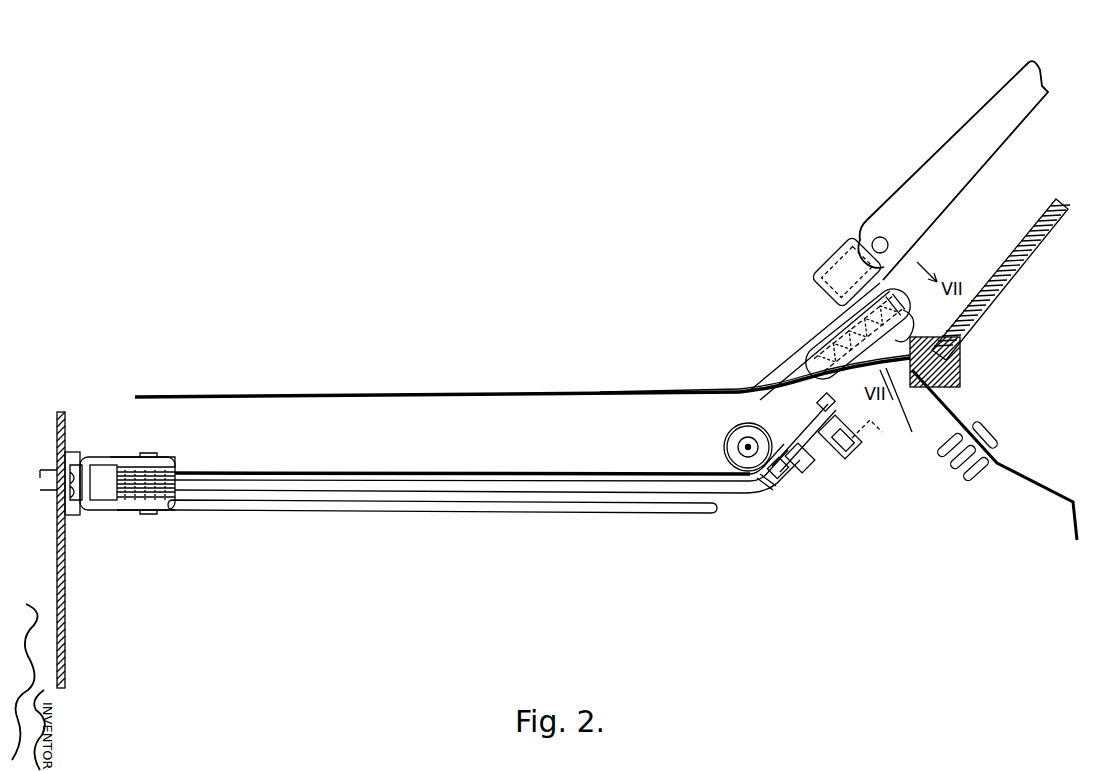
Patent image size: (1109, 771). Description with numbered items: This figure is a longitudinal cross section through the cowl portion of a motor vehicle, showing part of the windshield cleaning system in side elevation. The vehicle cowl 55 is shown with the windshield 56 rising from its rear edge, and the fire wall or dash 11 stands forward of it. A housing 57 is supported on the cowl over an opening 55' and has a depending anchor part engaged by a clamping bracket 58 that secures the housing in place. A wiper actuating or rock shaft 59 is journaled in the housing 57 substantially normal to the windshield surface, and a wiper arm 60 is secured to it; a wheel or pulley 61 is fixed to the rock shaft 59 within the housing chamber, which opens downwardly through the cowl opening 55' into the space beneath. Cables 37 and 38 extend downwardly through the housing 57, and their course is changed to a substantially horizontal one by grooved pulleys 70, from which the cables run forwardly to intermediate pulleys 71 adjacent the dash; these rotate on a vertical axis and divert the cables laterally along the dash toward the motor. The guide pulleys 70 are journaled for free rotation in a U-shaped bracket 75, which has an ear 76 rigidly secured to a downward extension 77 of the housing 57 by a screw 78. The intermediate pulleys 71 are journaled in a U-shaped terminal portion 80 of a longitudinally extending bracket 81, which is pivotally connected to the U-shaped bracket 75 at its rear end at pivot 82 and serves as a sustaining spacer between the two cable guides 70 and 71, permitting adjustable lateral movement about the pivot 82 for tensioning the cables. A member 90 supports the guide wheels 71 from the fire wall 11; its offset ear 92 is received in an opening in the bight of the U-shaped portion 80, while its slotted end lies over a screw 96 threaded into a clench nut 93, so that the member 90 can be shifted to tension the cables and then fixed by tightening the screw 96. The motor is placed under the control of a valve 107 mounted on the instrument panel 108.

The fire wall 11 is at (65, 600).
The cable 37 is at (288, 473).
The cable 38 is at (298, 493).
The vehicle cowl 55 is at (437, 381).
The opening in the cowl 55' is at (816, 358).
The windshield 56 is at (1028, 258).
The housing 57 is at (797, 360).
The clamping bracket 58 is at (981, 438).
The wiper actuating or rock shaft 59 is at (885, 282).
The wiper arm 60 is at (894, 200).
The wheel or pulley 61 is at (913, 325).
The grooved pulley 70 is at (725, 436).
The intermediate pulley 71 is at (177, 470).
The U-shaped bracket 75 is at (745, 437).
The ear 76 is at (797, 442).
The downward extension 77 is at (808, 452).
The screw 78 is at (854, 447).
The U-shaped terminal portion 80 is at (157, 460).
The longitudinally extending bracket 81 is at (428, 512).
The pivotal connection 82 is at (786, 478).
The member 90 is at (73, 517).
The offset ear 92 is at (103, 472).
The clench nut 93 is at (35, 503).
The screw 96 is at (80, 458).
The valve 107 is at (983, 479).
The instrument panel 108 is at (957, 418).